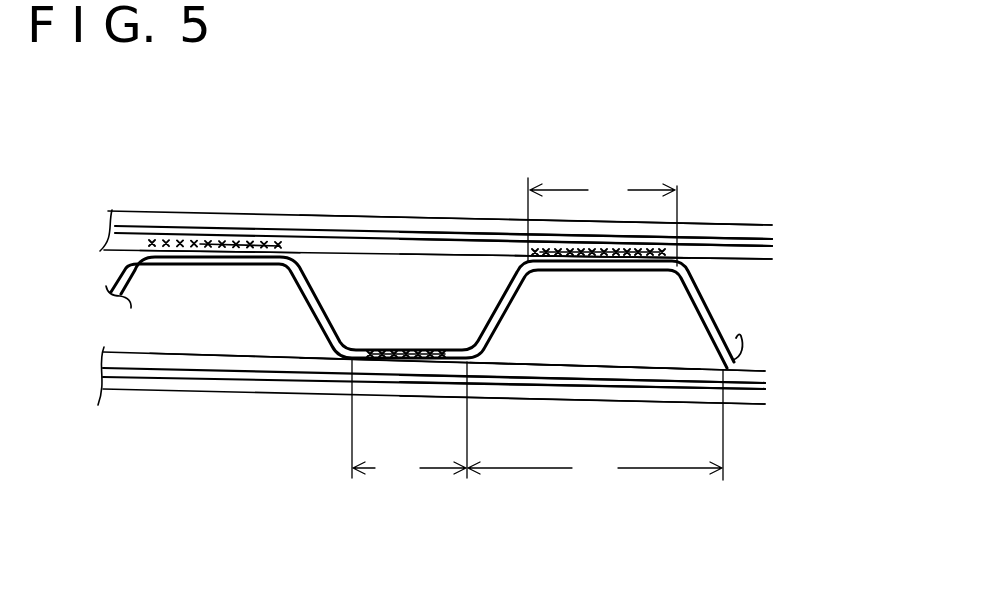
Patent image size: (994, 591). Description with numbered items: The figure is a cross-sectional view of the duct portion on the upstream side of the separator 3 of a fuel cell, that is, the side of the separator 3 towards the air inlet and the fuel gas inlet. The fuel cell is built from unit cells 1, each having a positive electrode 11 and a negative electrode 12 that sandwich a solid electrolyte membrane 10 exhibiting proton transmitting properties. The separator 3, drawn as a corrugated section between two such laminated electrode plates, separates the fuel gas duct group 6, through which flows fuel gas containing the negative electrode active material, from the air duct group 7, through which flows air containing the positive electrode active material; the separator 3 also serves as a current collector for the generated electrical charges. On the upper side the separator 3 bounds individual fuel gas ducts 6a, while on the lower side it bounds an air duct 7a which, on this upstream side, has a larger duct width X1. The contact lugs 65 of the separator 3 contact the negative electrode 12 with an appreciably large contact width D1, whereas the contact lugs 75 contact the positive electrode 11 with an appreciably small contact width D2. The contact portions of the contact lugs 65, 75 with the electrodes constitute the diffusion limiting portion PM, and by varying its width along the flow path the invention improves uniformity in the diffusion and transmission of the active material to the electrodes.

The unit cell 1 is at (474, 288).
The separator 3 is at (324, 304).
The fuel gas duct group 6 is at (397, 278).
The fuel gas duct 6a is at (460, 280).
The air duct group 7 is at (188, 332).
The air duct 7a is at (237, 332).
The solid electrolyte membrane 10 is at (765, 242).
The positive electrode 11 is at (758, 228).
The negative electrode 12 is at (757, 260).
The contact lugs 65 is at (197, 254).
The contact lugs 75 is at (414, 382).
The diffusion limiting portion PM is at (258, 250).
The contact width D1 is at (602, 218).
The contact width D2 is at (409, 422).
The duct width X1 is at (595, 427).